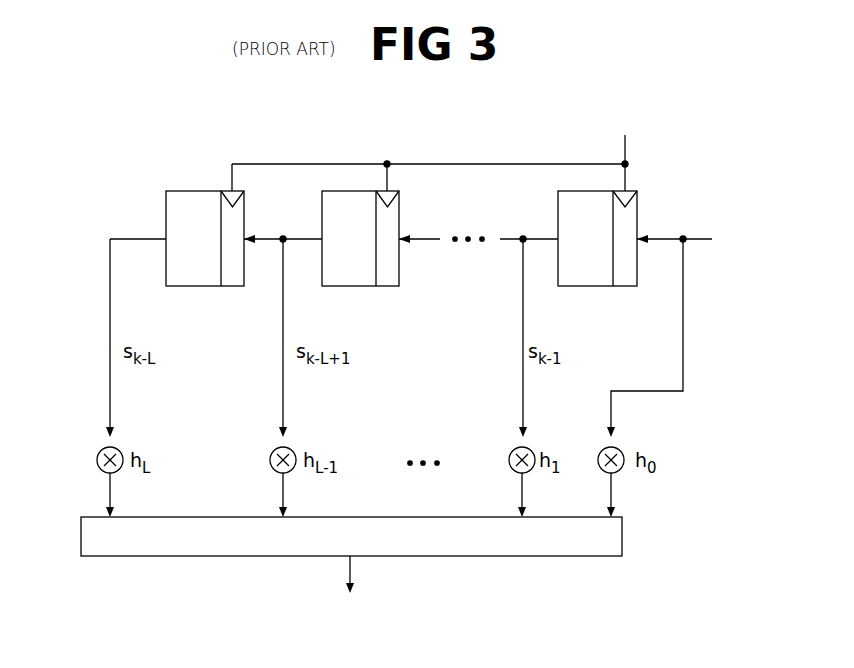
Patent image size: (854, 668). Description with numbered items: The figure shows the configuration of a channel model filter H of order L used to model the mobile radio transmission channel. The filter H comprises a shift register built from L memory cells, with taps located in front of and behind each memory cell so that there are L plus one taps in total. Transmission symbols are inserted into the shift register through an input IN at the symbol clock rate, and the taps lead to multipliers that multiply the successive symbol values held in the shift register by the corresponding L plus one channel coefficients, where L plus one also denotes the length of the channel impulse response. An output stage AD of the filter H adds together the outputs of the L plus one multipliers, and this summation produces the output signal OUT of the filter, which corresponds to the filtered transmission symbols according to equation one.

The channel model filter H is at (508, 134).
The input IN is at (703, 241).
The output stage AD is at (586, 540).
The output signal OUT is at (350, 594).